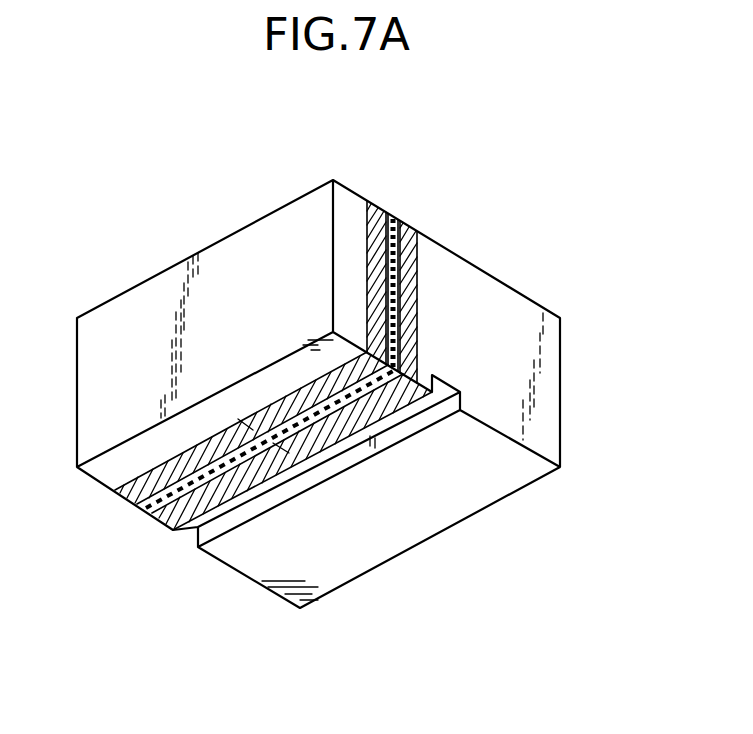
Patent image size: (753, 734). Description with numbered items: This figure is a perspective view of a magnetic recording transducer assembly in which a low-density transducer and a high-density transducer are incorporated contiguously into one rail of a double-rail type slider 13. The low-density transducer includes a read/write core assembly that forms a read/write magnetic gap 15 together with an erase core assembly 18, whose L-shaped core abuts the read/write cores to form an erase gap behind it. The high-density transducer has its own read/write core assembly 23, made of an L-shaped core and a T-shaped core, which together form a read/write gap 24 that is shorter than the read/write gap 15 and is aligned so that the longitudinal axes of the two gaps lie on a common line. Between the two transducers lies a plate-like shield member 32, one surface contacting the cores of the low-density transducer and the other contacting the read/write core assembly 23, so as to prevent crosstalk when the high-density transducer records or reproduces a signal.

The double-rail type slider 13 is at (550, 385).
The read/write magnetic gap 15 is at (247, 417).
The erase core assembly 18 is at (378, 207).
The shield member 32 is at (396, 218).
The read/write core assembly 23 is at (413, 258).
The read/write gap 24 is at (288, 450).